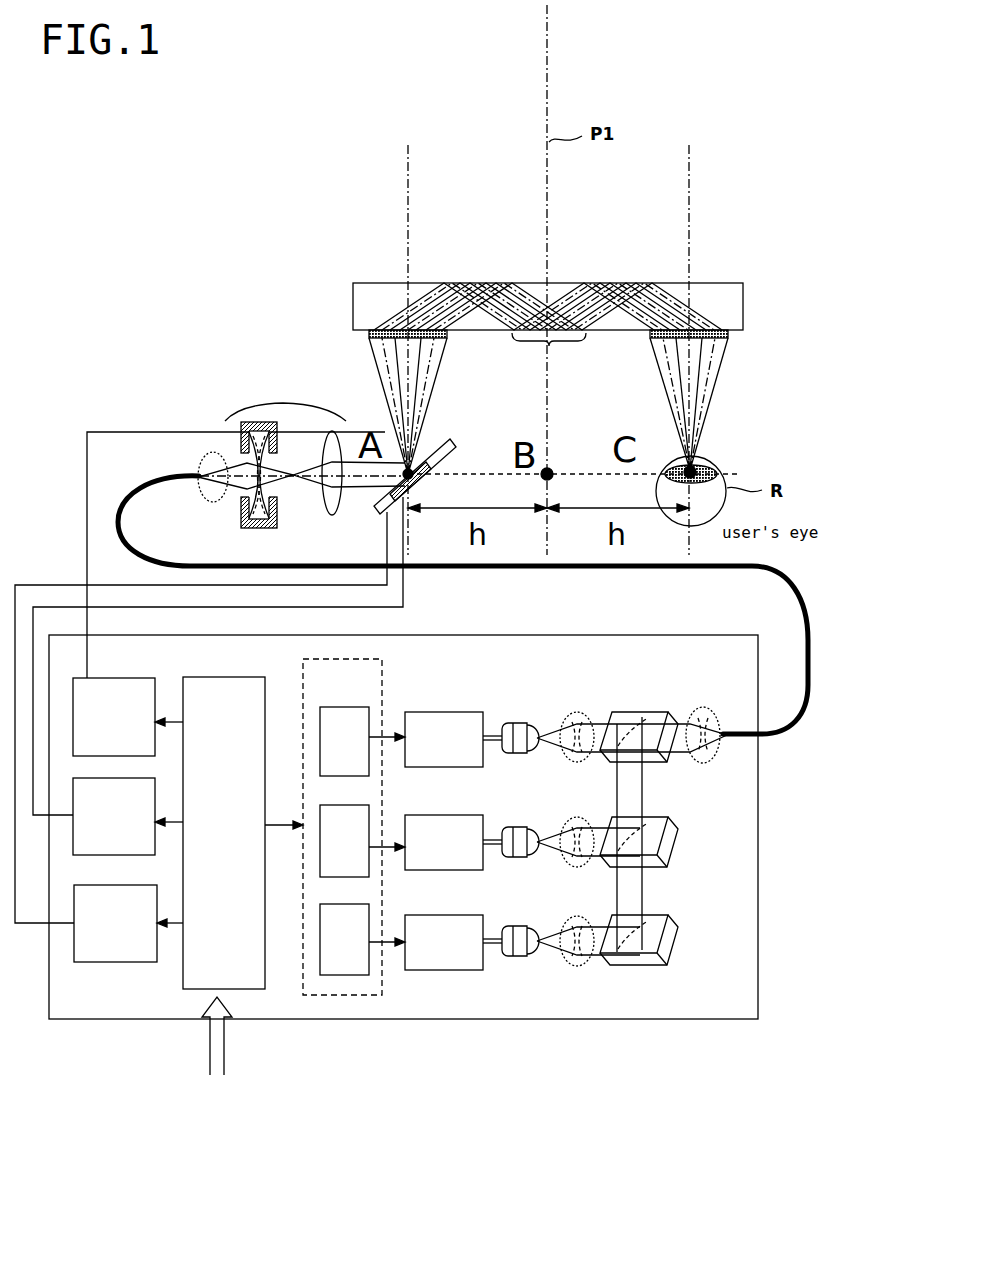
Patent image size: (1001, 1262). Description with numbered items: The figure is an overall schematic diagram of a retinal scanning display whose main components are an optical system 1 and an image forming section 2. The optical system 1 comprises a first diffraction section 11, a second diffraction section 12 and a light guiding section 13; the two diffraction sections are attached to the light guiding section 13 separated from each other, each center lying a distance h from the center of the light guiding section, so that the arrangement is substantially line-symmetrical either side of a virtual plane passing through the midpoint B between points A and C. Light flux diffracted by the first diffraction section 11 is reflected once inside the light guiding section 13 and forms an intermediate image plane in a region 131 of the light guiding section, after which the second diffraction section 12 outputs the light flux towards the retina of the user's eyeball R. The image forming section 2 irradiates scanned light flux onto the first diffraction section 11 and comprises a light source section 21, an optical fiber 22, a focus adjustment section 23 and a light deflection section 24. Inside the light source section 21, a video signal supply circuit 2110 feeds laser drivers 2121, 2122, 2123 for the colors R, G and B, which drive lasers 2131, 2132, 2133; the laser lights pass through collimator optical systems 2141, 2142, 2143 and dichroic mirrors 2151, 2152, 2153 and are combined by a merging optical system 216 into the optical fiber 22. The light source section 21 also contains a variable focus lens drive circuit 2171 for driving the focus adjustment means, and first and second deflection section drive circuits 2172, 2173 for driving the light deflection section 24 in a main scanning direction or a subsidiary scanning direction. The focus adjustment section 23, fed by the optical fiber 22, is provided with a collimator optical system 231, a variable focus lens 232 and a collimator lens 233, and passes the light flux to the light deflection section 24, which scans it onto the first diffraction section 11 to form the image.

The optical system 1 is at (736, 250).
The image forming section 2 is at (50, 418).
The first diffraction section 11 is at (448, 334).
The second diffraction section 12 is at (732, 333).
The light guiding section 13 is at (744, 291).
The region 131 is at (549, 346).
The light source section 21 is at (622, 1036).
The optical fiber 22 is at (797, 602).
The focus adjustment section 23 is at (283, 403).
The light deflection section 24 is at (450, 447).
The merging optical system 216 is at (717, 753).
The collimator optical system 231 is at (200, 460).
The variable focus lens 232 is at (277, 520).
The collimator lens 233 is at (338, 512).
The video signal supply circuit 2110 is at (223, 675).
The laser driver 2121 is at (445, 710).
The laser driver 2122 is at (440, 815).
The laser driver 2123 is at (440, 915).
The laser 2131 is at (537, 722).
The laser 2132 is at (540, 835).
The laser 2133 is at (520, 957).
The collimator optical system 2141 is at (583, 763).
The collimator optical system 2142 is at (583, 868).
The collimator optical system 2143 is at (568, 962).
The dichroic mirror 2151 is at (650, 713).
The dichroic mirror 2152 is at (655, 817).
The dichroic mirror 2153 is at (655, 915).
The variable focus lens drive circuit 2171 is at (108, 675).
The first deflection section drive circuit 2172 is at (100, 773).
The second deflection section drive circuit 2173 is at (104, 880).